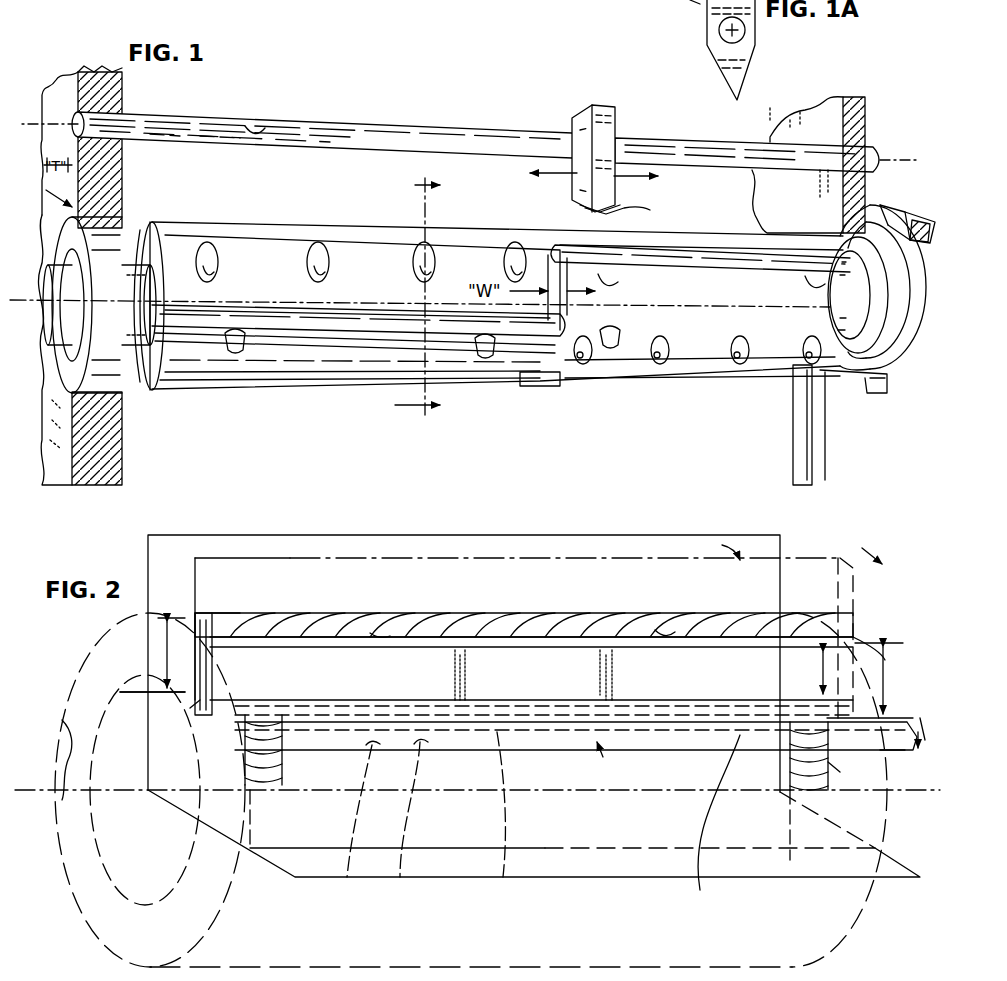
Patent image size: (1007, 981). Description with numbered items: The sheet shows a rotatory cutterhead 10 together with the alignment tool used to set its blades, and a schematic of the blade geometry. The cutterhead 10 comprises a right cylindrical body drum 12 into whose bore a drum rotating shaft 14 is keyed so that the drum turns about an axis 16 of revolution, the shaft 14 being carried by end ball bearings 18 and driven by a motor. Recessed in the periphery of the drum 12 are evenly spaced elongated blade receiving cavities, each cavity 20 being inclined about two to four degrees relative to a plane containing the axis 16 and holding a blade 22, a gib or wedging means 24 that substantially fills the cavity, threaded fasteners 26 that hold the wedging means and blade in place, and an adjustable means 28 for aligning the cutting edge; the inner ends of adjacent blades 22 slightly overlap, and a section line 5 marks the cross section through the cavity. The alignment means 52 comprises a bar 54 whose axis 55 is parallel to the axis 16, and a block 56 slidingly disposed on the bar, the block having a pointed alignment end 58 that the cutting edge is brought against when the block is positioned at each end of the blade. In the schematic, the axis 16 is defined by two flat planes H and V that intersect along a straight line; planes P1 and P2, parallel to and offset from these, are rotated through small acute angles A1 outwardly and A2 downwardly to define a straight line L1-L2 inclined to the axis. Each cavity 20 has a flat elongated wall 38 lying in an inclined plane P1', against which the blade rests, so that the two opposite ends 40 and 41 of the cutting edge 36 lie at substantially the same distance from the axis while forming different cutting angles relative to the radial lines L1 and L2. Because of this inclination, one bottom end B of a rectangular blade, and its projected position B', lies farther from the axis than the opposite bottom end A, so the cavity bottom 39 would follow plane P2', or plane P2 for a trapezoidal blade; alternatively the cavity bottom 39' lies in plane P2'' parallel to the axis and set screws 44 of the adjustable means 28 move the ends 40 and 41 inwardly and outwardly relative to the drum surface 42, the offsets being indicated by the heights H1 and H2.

In FIG. 1, the cutterhead 10 is at (358, 410).
In FIG. 1, the body drum 12 is at (256, 372).
In FIG. 2, the body drum 12 is at (215, 915).
In FIG. 1, the drum rotating shaft 14 is at (70, 230).
In FIG. 1, the axis of revolution 16 is at (72, 392).
In FIG. 2, the axis of revolution 16 is at (75, 735).
In FIG. 1, the end ball bearings 18 is at (105, 233).
In FIG. 1, the blade receiving cavity 20 is at (540, 382).
In FIG. 1, the blade 22 is at (397, 325).
In FIG. 1, the wedging means 24 is at (385, 240).
In FIG. 1, the threaded fasteners 26 is at (325, 255).
In FIG. 1, the adjustable means 28 is at (232, 348).
In FIG. 2, the cutting edge 36 is at (378, 632).
In FIG. 1, the cavity wall 38 is at (300, 340).
In FIG. 2, the cavity wall 38 is at (553, 597).
In FIG. 2, the cavity bottom 39 is at (576, 663).
In FIG. 2, the cavity bottom 39' is at (373, 821).
In FIG. 2, the end of cutting edge 40 is at (858, 640).
In FIG. 2, the end of cutting edge 41 is at (215, 615).
In FIG. 2, the drum surface 42 is at (668, 630).
In FIG. 2, the set screws 44 is at (280, 782).
In FIG. 1, the section line 5- 5 is at (426, 296).
In FIG. 1, the alignment means 52 is at (478, 112).
In FIG. 1, the bar 54 is at (355, 128).
In FIG. 1, the bar axis 55 is at (257, 130).
In FIG. 1, the block 56 is at (612, 125).
In FIG. 1A, the block 56 is at (676, 6).
In FIG. 1, the pointed alignment end 58 is at (622, 207).
In FIG. 1A, the pointed alignment end 58 is at (745, 100).
In FIG. 2, the plane V is at (565, 552).
In FIG. 2, the plane H is at (580, 865).
In FIG. 2, the height dimension H1 is at (519, 683).
In FIG. 2, the height dimension H2 is at (823, 666).
In FIG. 2, the radial line L1 is at (885, 718).
In FIG. 2, the radial line L2 is at (125, 690).
In FIG. 2, the bottom end A is at (195, 715).
In FIG. 2, the angle A1 is at (741, 560).
In FIG. 2, the angle A2 is at (591, 764).
In FIG. 2, the bottom end B is at (898, 762).
In FIG. 2, the point B' is at (848, 769).
In FIG. 2, the plane P1 is at (847, 621).
In FIG. 2, the plane P1' is at (517, 601).
In FIG. 2, the plane P2 is at (506, 824).
In FIG. 2, the plane P2' is at (723, 828).
In FIG. 2, the plane P2'' is at (432, 829).